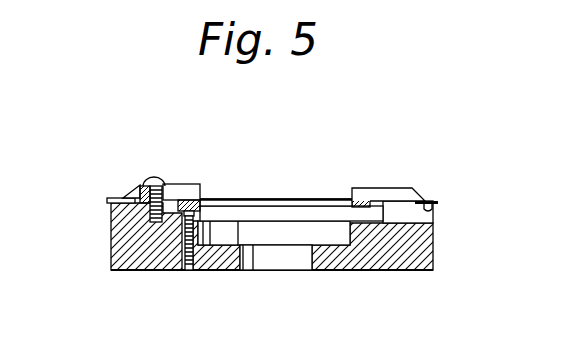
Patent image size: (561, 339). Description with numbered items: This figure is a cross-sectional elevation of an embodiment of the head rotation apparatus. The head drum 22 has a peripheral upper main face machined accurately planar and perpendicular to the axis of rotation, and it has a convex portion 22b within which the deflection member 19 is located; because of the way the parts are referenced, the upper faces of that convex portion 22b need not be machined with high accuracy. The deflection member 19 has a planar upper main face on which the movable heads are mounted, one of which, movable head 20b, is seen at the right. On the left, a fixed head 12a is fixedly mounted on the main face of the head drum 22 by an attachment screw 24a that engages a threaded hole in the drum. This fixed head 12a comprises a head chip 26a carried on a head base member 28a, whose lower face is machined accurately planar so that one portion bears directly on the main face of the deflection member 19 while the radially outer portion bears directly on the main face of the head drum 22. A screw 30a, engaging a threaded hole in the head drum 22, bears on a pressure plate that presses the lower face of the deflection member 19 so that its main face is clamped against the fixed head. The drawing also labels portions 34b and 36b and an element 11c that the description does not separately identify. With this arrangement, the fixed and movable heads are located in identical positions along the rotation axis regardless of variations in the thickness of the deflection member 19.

The head drum 22 is at (402, 272).
The head chip 26a is at (112, 205).
The right support wall 34b is at (435, 213).
The convex portion 22b is at (315, 211).
The deflection member 19 is at (280, 198).
The clamp block 36b is at (381, 189).
The movable head 20b is at (424, 195).
The head base member 28a is at (188, 184).
The spacer 11c is at (200, 207).
The fixed head 12a is at (125, 190).
The attachment screw 24a is at (153, 178).
The screw 30a is at (190, 270).